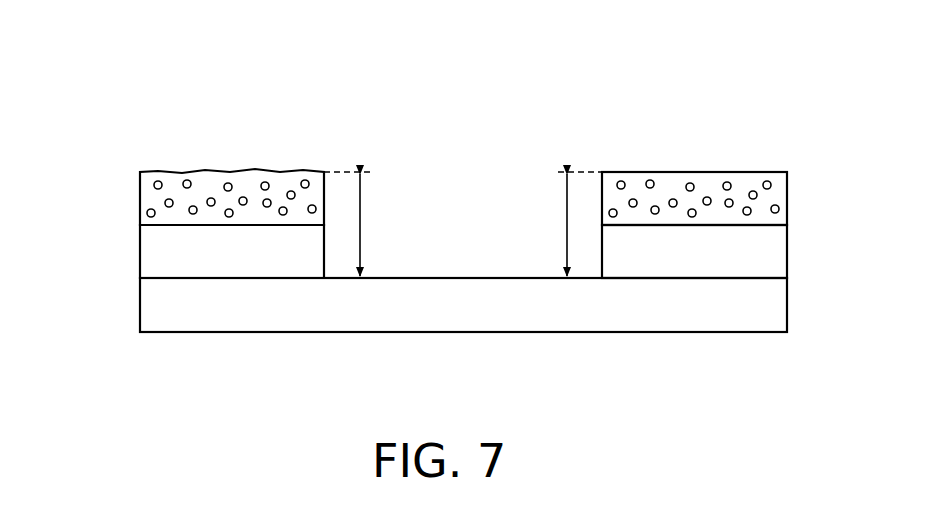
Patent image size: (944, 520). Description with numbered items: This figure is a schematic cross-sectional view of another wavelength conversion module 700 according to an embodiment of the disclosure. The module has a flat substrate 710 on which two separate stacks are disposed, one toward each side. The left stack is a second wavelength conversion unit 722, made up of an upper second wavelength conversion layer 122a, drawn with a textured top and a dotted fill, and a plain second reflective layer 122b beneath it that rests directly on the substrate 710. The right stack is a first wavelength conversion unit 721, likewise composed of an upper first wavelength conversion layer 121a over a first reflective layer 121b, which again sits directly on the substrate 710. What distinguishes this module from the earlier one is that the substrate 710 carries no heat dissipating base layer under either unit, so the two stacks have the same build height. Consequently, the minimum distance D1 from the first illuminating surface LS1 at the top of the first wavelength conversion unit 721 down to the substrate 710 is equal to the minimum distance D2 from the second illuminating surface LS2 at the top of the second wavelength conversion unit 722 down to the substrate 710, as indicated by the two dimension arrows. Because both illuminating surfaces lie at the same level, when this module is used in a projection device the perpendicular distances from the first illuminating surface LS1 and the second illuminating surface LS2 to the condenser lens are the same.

The wavelength conversion module 700 is at (126, 70).
The substrate 710 is at (160, 303).
The second wavelength conversion unit 722 is at (63, 183).
The second wavelength conversion layer 122a is at (150, 198).
The second reflective layer 122b is at (150, 253).
The first wavelength conversion unit 721 is at (865, 183).
The first wavelength conversion layer 121a is at (787, 198).
The first reflective layer 121b is at (775, 253).
The second illuminating surface LS2 is at (234, 165).
The first illuminating surface LS1 is at (703, 113).
The minimum distance D2 is at (362, 224).
The minimum distance D1 is at (566, 224).